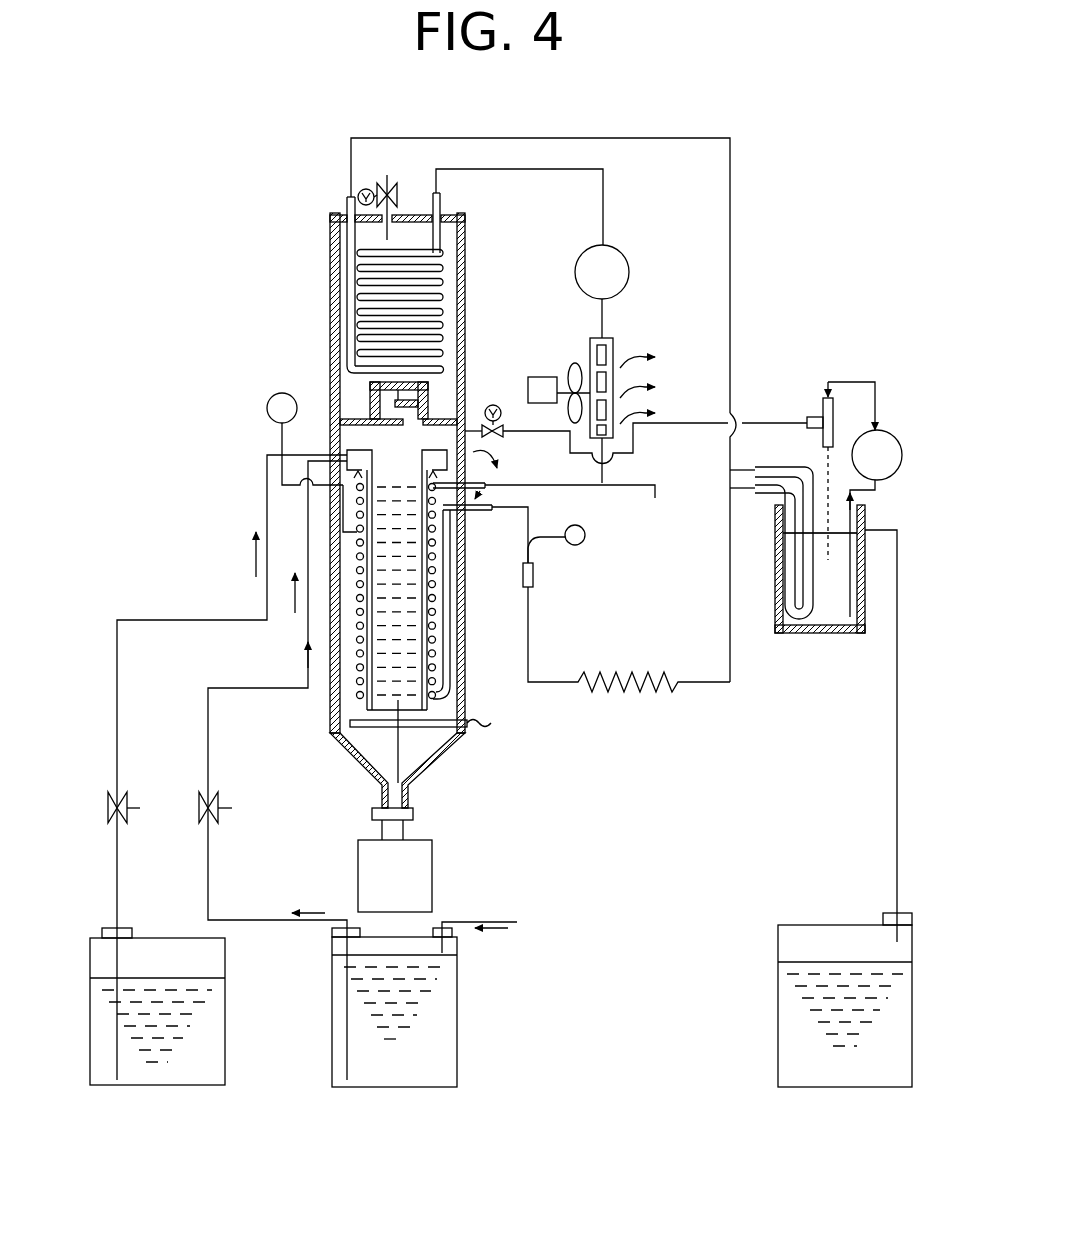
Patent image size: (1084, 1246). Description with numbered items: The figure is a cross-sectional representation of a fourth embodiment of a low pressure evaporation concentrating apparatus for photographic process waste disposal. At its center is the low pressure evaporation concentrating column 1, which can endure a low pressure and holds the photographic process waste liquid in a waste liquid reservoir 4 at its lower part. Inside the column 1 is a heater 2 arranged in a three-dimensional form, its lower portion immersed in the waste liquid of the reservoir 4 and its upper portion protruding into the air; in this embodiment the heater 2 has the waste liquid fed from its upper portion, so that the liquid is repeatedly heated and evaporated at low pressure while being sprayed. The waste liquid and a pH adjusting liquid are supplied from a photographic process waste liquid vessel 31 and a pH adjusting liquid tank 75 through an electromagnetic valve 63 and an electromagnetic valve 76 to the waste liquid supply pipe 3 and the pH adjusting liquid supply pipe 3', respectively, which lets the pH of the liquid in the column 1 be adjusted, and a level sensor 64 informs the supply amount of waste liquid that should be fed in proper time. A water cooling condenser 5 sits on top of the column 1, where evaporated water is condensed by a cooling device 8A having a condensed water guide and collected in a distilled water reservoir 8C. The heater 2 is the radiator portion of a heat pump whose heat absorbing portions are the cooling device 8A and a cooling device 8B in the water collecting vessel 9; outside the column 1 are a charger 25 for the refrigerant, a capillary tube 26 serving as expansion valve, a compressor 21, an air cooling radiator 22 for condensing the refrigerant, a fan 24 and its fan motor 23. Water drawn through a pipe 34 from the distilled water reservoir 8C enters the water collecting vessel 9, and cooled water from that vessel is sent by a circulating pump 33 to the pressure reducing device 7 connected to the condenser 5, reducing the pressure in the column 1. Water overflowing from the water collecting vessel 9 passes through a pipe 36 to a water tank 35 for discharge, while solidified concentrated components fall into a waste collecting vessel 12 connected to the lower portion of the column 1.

The low pressure evaporation concentrating column 1 is at (465, 632).
The heater 2 is at (436, 570).
The waste liquid supply pipe 3 is at (245, 770).
The pH adjusting liquid supply pipe 3' is at (202, 767).
The waste liquid reservoir 4 is at (462, 696).
The water cooling condenser 5 is at (455, 212).
The pressure reducing device 7 is at (823, 410).
The cooling device 8A is at (440, 268).
The cooling device 8B is at (800, 633).
The distilled water reservoir 8C is at (445, 420).
The water collecting vessel 9 is at (845, 633).
The waste collecting vessel 12 is at (432, 880).
The compressor 21 is at (629, 268).
The air cooling radiator 22 is at (613, 346).
The fan motor 23 is at (540, 377).
The fan 24 is at (575, 361).
The charger 25 is at (627, 487).
The capillary tube 26 is at (632, 692).
The photographic process waste liquid vessel 31 is at (457, 1055).
The circulating pump 33 is at (895, 433).
The pipe 34 is at (768, 423).
The water tank 35 is at (846, 1087).
The pipe 36 is at (390, 185).
The electromagnetic valve 63 is at (228, 797).
The level sensor 64 is at (270, 420).
The pH adjusting liquid tank 75 is at (225, 1082).
The electromagnetic valve 76 is at (108, 800).